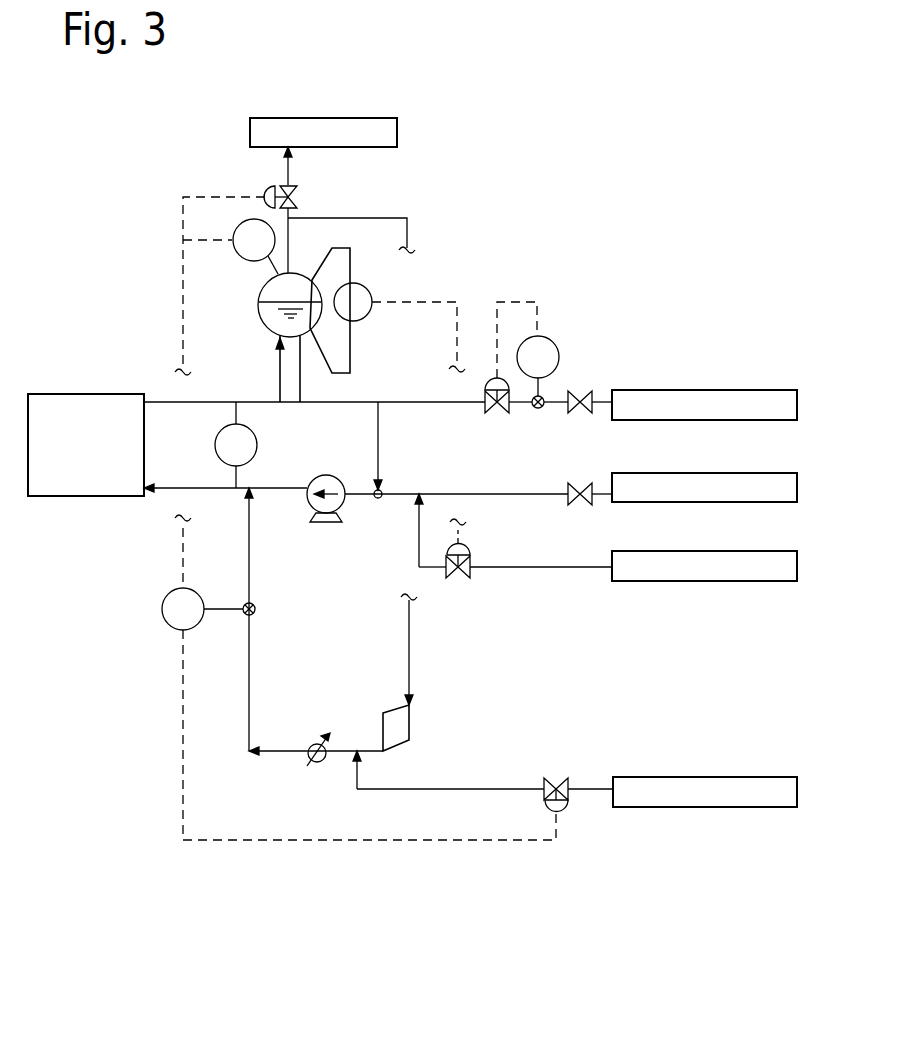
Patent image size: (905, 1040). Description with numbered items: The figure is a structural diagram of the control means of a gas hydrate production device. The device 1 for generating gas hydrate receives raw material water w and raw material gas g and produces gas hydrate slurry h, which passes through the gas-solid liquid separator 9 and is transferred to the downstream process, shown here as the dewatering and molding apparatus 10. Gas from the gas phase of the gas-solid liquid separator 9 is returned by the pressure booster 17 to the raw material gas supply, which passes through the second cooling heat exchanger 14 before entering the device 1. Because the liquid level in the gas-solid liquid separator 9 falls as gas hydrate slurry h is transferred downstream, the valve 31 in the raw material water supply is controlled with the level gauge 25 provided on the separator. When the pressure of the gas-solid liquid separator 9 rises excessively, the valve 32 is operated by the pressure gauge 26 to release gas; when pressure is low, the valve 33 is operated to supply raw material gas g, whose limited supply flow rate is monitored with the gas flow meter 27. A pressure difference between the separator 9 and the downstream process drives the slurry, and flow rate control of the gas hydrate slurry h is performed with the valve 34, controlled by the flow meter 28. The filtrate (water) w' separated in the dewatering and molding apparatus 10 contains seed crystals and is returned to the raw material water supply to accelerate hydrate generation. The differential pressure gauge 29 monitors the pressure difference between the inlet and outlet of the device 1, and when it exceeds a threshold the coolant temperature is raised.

The device for generating gas hydrate 1 is at (100, 394).
The gas-solid liquid separator 9 is at (260, 283).
The gas hydrate slurry h is at (265, 318).
The dewatering and molding apparatus 10 is at (705, 390).
The second cooling heat exchanger 14 is at (315, 743).
The pressure booster 17 is at (403, 722).
The level gauge 25 is at (355, 323).
The pressure gauge 26 is at (242, 222).
The gas flow meter 27 is at (163, 609).
The flow meter 28 is at (552, 340).
The differential pressure gauge 29 is at (257, 440).
The valve 31 is at (470, 548).
The valve 32 is at (266, 196).
The valve 33 is at (565, 812).
The valve 34 is at (486, 384).
The raw material water w is at (704, 543).
The filtrate (water) w' is at (704, 463).
The raw material gas g is at (712, 777).